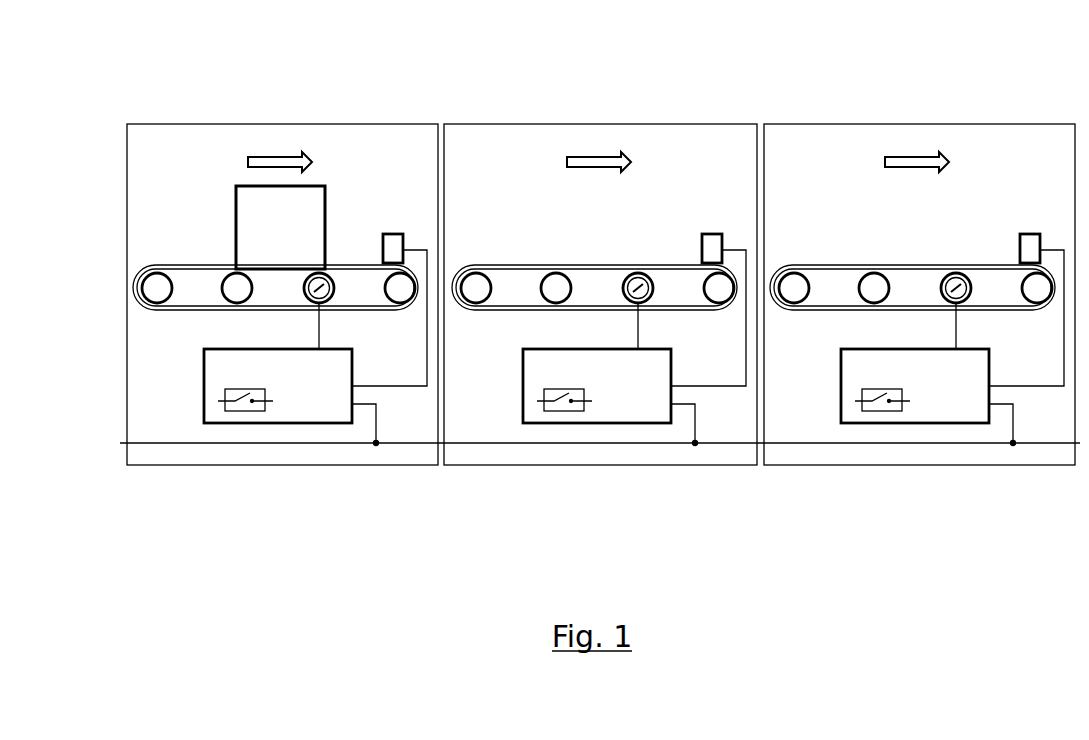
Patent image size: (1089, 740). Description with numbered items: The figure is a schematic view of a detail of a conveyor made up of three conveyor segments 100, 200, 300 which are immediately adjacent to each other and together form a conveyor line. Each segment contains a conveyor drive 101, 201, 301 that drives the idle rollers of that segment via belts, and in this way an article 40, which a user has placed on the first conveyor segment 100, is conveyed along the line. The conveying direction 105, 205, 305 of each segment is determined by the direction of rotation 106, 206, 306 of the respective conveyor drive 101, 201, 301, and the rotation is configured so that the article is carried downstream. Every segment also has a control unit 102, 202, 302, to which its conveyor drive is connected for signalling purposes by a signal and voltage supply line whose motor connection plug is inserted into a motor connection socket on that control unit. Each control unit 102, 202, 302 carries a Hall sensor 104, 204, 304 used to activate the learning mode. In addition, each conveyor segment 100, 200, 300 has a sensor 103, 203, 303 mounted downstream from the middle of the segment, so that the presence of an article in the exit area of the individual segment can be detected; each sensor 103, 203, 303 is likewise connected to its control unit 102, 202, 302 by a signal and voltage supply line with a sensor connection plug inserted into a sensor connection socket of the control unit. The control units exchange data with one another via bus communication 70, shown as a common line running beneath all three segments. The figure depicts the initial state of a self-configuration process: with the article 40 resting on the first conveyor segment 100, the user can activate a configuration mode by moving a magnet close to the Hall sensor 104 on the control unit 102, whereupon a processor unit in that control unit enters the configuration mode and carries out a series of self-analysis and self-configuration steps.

The bus communication 70 is at (182, 443).
The article 40 is at (236, 213).
The first conveyor segment 100 is at (160, 124).
The conveyor drive 101 is at (337, 286).
The control unit 102 is at (302, 423).
The sensor 103 is at (393, 234).
The Hall sensor 104 is at (245, 411).
The conveying direction 105 is at (277, 157).
The direction of rotation 106 is at (323, 283).
The second conveyor segment 200 is at (600, 251).
The conveyor drive 201 is at (669, 211).
The control unit 202 is at (610, 439).
The sensor 203 is at (719, 217).
The Hall sensor 204 is at (557, 453).
The conveying direction 205 is at (594, 111).
The direction of rotation 206 is at (663, 167).
The third conveyor segment 300 is at (919, 251).
The conveyor drive 301 is at (987, 211).
The control unit 302 is at (928, 439).
The sensor 303 is at (1037, 217).
The Hall sensor 304 is at (875, 453).
The conveying direction 305 is at (912, 111).
The direction of rotation 306 is at (981, 167).